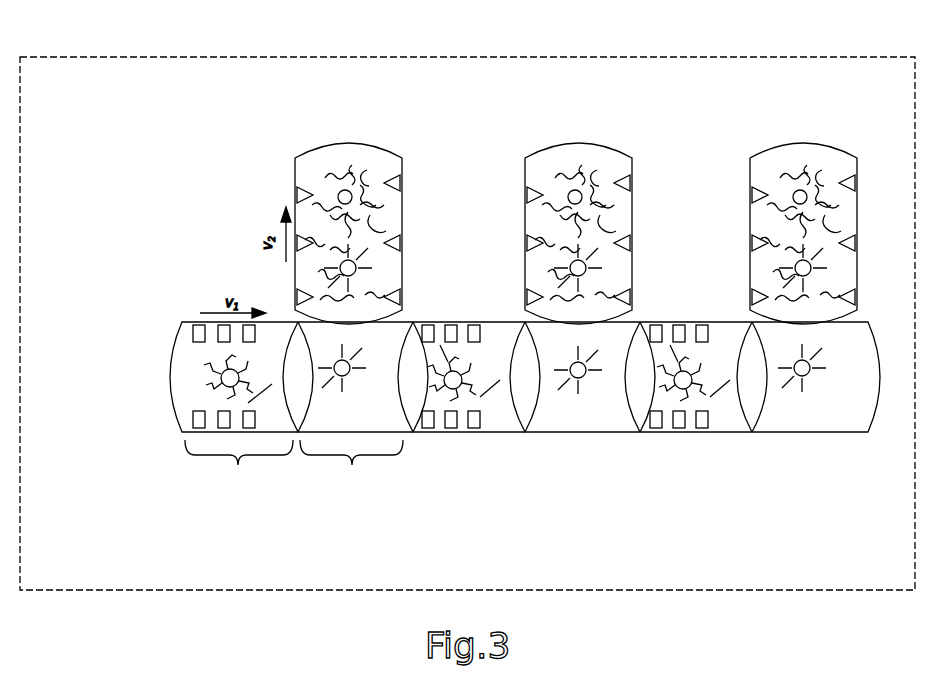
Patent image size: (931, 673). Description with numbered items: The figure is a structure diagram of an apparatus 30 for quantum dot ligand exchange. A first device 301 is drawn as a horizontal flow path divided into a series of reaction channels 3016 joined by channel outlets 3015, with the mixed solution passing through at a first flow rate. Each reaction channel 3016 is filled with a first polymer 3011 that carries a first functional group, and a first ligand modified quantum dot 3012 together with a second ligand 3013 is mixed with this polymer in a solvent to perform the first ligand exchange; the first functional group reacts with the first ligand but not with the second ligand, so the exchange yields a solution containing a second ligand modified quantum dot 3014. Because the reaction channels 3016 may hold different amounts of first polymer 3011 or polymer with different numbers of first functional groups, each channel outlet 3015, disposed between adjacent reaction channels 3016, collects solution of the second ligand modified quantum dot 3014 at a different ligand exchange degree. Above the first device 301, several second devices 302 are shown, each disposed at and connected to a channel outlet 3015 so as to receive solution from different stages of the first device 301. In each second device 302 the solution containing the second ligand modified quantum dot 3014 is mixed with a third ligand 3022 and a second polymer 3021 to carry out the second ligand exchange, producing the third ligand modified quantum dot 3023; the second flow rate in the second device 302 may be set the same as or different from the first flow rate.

The apparatus 30 is at (660, 45).
The first device 301 is at (484, 371).
The first polymer 3011 is at (196, 423).
The first ligand modified quantum dot 3012 is at (217, 382).
The second ligand 3013 is at (193, 372).
The second ligand modified quantum dot 3014 is at (358, 262).
The channel outlet 3015 is at (351, 469).
The reaction channel 3016 is at (239, 469).
The second device 302 is at (532, 197).
The second polymer 3021 is at (312, 195).
The third ligand 3022 is at (320, 277).
The third ligand modified quantum dot 3023 is at (343, 191).